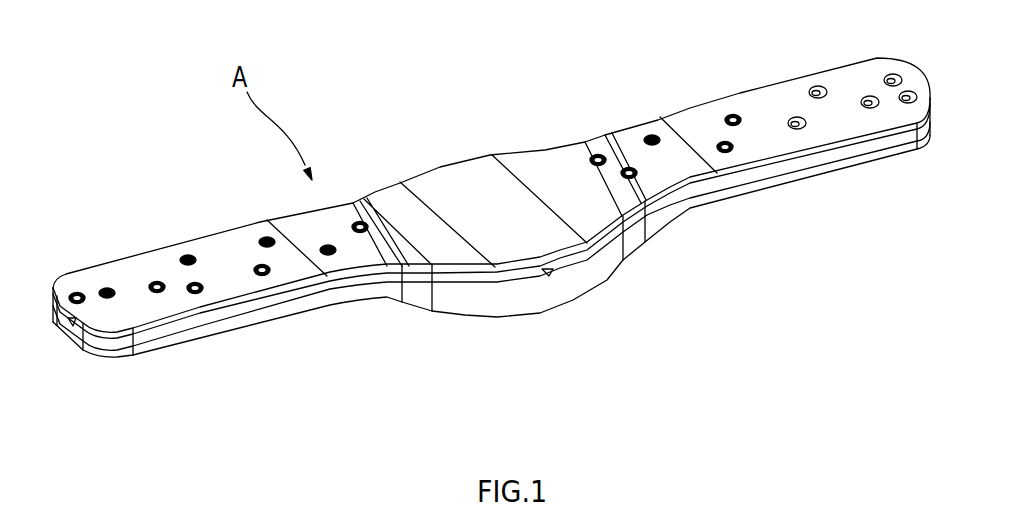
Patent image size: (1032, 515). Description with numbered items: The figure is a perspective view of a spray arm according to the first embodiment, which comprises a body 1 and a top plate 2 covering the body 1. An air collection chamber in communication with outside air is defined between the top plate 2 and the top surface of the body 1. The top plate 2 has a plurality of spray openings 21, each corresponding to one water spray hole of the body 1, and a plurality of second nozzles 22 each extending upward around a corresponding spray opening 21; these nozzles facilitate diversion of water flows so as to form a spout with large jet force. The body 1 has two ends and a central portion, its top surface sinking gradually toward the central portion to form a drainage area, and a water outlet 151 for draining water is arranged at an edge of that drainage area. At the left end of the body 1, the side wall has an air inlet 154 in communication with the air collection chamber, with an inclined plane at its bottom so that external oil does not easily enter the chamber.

The body 1 is at (493, 303).
The top plate 2 is at (448, 172).
The spray openings 21 is at (72, 297).
The second nozzles 22 is at (191, 258).
The water outlet 151 is at (548, 273).
The air inlet 154 is at (72, 324).